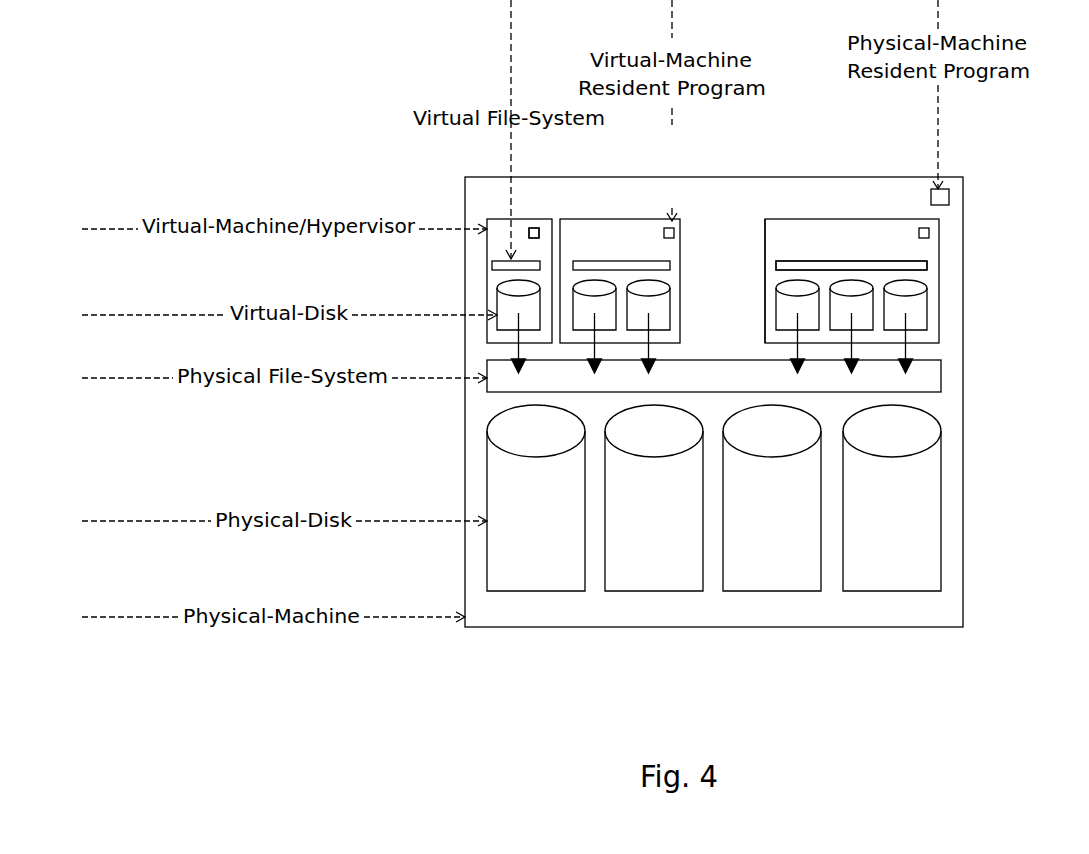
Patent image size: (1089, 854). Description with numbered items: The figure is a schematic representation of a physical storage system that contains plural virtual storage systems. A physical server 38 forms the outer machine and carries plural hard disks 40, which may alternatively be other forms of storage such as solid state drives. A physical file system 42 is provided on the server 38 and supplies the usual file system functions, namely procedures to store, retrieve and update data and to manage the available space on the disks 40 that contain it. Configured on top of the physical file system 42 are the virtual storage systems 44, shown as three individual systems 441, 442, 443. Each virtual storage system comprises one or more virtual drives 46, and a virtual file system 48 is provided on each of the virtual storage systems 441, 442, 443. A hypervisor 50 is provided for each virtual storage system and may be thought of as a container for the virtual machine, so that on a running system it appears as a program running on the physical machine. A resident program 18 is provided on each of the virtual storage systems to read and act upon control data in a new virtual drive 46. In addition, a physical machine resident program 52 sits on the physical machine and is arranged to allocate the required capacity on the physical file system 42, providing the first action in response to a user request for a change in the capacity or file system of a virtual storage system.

The physical server 38 is at (793, 627).
The hard disks 40 is at (932, 518).
The physical file system 42 is at (923, 378).
The virtual storage systems 44 is at (692, 249).
The first virtual storage system 441 is at (503, 228).
The second virtual storage system 442 is at (593, 235).
The third virtual storage system 443 is at (888, 249).
The virtual drives 46 is at (927, 292).
The virtual file system 48 is at (913, 271).
The hypervisor 50 is at (765, 233).
The physical machine resident program 52 is at (949, 193).
The resident program 18 is at (534, 227).